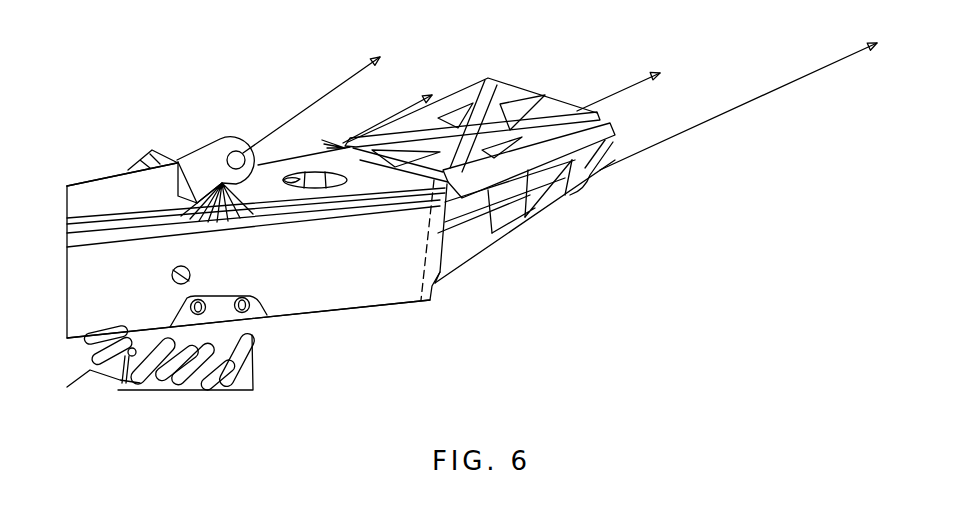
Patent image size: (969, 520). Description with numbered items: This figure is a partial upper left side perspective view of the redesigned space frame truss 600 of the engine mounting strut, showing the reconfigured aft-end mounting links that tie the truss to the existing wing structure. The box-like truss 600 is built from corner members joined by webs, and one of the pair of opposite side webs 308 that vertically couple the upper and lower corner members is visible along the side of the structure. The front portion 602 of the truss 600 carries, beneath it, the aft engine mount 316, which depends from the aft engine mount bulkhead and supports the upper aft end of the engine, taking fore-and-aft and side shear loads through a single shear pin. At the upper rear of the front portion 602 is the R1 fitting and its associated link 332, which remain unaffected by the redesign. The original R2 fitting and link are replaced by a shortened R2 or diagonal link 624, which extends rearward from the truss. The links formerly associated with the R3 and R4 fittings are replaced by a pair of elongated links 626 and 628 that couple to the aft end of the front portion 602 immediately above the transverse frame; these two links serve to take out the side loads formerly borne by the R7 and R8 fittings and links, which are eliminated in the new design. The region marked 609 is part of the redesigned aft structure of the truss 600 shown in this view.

The truss 600 is at (177, 92).
The R1 fitting R1 is at (236, 136).
The link 332 is at (322, 97).
The elongated link 628 is at (415, 104).
The elongated link 626 is at (626, 86).
The diagonal link 624 is at (747, 104).
The support truss 609 is at (537, 232).
The side web 308 is at (370, 292).
The front portion 602 is at (332, 340).
The aft engine mount 316 is at (233, 360).